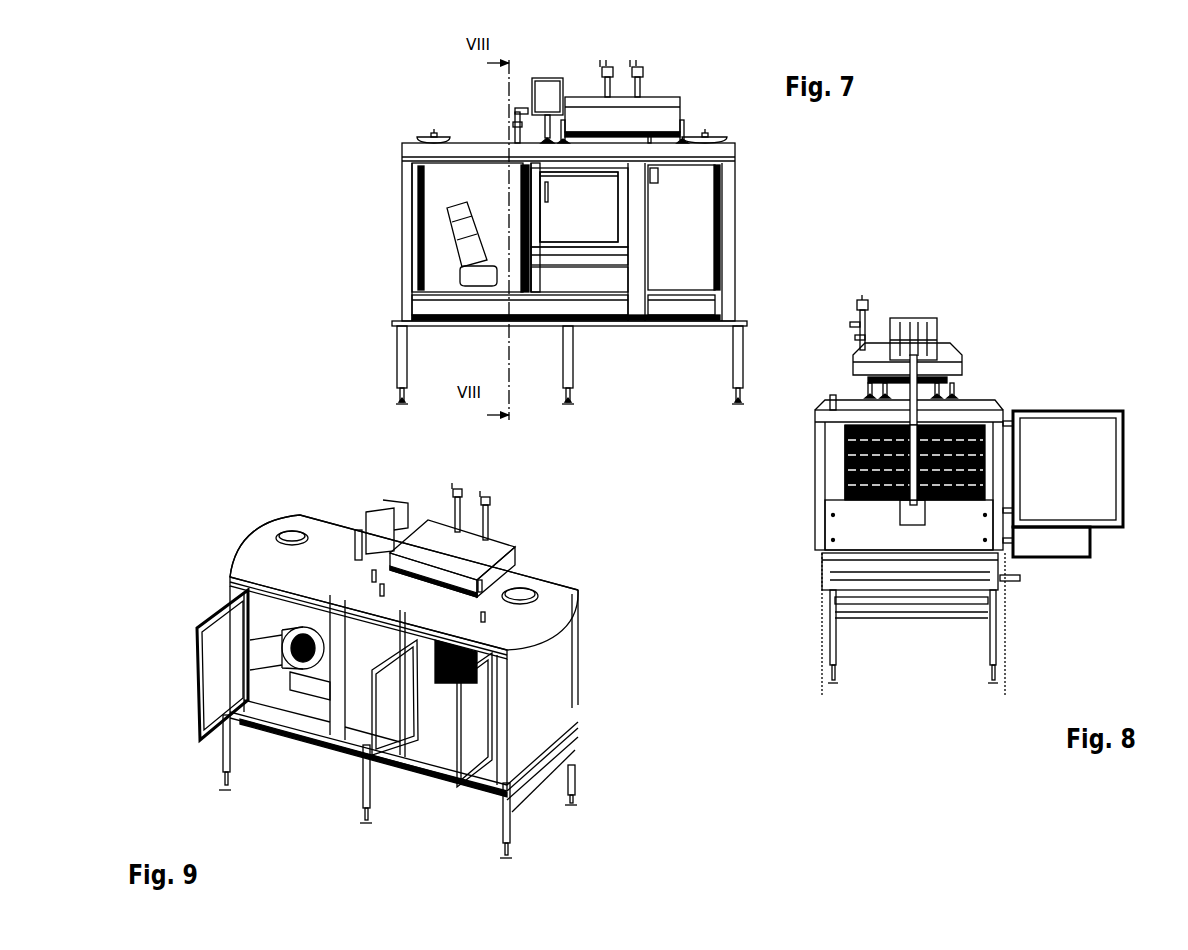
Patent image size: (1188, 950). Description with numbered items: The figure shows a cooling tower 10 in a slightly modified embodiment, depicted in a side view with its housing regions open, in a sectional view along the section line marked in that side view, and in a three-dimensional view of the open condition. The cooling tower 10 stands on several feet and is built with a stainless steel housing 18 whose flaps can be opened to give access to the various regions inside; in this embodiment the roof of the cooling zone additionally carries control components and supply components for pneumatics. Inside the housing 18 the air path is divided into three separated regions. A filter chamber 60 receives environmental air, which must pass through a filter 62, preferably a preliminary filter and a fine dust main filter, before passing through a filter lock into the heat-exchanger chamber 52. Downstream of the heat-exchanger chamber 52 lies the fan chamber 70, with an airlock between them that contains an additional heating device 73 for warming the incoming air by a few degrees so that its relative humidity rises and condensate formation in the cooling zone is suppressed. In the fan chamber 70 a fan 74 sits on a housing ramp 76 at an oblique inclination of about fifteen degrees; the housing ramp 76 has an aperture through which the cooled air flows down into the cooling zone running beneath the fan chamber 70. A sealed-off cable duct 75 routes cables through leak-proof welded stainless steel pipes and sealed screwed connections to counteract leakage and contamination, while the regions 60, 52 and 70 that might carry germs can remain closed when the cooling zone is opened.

In FIG. 7, the cooling tower 10 is at (378, 128).
In FIG. 8, the cooling tower 10 is at (973, 325).
In FIG. 9, the cooling tower 10 is at (262, 500).
In FIG. 9, the housing 18 is at (267, 573).
In FIG. 7, the heat-exchanger chamber 52 is at (585, 228).
In FIG. 7, the filter chamber 60 is at (687, 215).
In FIG. 9, the filter 62 is at (527, 575).
In FIG. 7, the fan chamber 70 is at (463, 183).
In FIG. 7, the additional heating device 73 is at (518, 172).
In FIG. 8, the additional heating device 73 is at (960, 430).
In FIG. 7, the fan 74 is at (480, 218).
In FIG. 9, the fan 74 is at (290, 648).
In FIG. 7, the cable duct 75 is at (513, 182).
In FIG. 8, the cable duct 75 is at (900, 430).
In FIG. 7, the housing ramp 76 is at (470, 276).
In FIG. 9, the housing ramp 76 is at (292, 697).